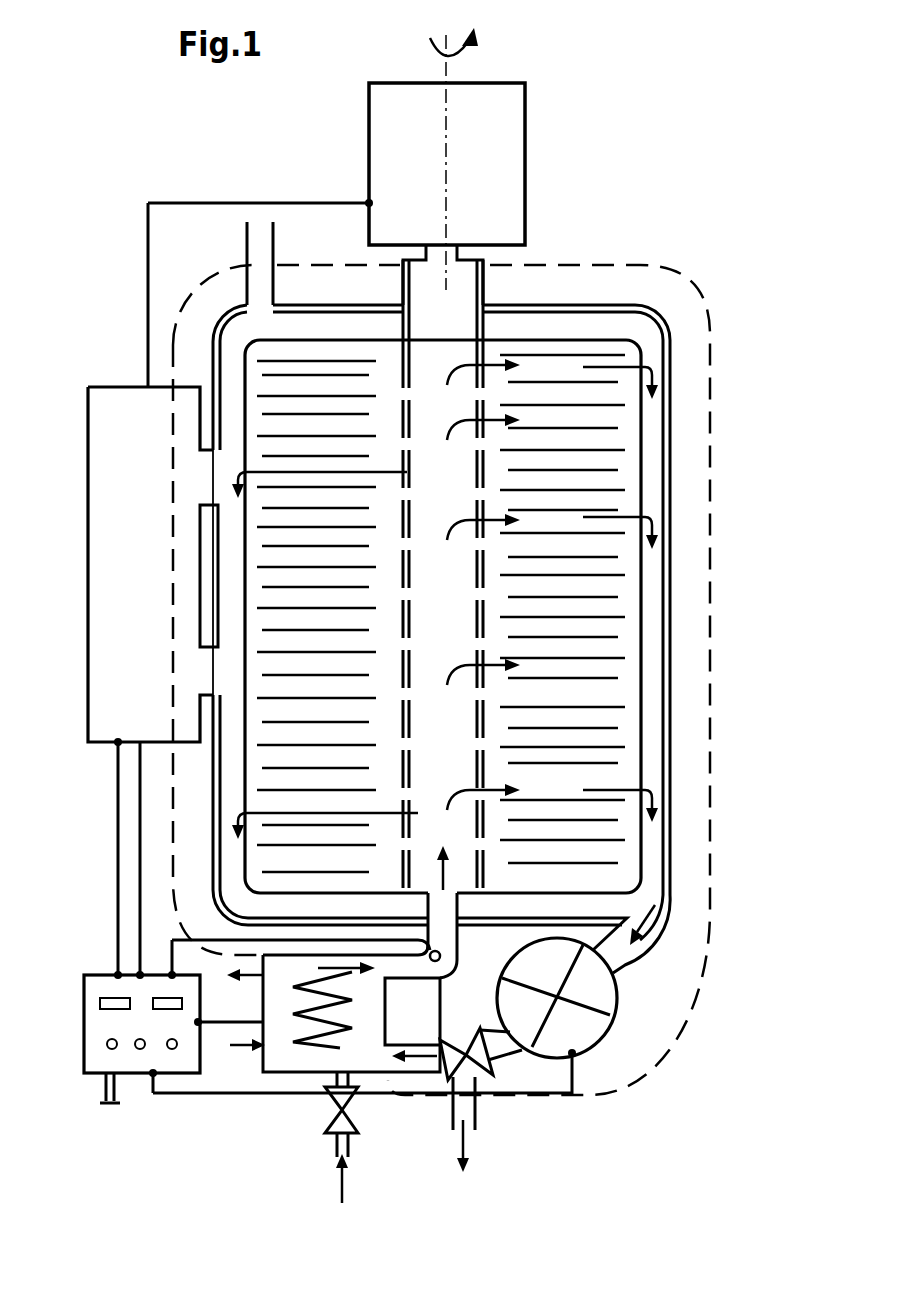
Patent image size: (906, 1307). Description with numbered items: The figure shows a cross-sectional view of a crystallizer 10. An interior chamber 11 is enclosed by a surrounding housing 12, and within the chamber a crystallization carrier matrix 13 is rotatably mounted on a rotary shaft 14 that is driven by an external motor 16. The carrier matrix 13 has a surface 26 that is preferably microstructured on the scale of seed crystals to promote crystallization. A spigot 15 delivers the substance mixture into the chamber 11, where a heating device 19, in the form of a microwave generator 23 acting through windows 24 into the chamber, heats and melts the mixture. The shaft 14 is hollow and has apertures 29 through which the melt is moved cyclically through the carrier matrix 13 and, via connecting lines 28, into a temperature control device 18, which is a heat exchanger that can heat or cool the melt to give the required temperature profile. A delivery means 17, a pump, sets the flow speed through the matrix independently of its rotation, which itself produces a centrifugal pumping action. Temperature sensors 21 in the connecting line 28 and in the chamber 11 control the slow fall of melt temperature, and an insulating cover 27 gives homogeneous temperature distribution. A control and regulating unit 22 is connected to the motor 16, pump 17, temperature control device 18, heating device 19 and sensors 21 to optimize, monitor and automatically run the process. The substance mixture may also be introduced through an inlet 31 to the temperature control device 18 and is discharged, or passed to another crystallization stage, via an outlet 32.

The crystallizer 10 is at (788, 780).
The interior chamber 11 is at (650, 470).
The housing 12 is at (657, 313).
The crystallization carrier matrix 13 is at (605, 835).
The rotary shaft 14 is at (485, 588).
The spigot 15 is at (247, 258).
The motor 16 is at (527, 134).
The delivery means 17 is at (608, 1028).
The temperature control device 18 is at (262, 1060).
The heating device 19 is at (88, 583).
The temperature sensors 21 is at (652, 650).
The control and regulating unit 22 is at (122, 985).
The microwave generator 23 is at (115, 403).
The windows 24 is at (211, 474).
The surface 26 is at (555, 850).
The insulating cover 27 is at (712, 365).
The connecting lines 28 is at (457, 950).
The apertures 29 is at (480, 710).
The inlet 31 is at (338, 1140).
The outlet 32 is at (453, 1113).